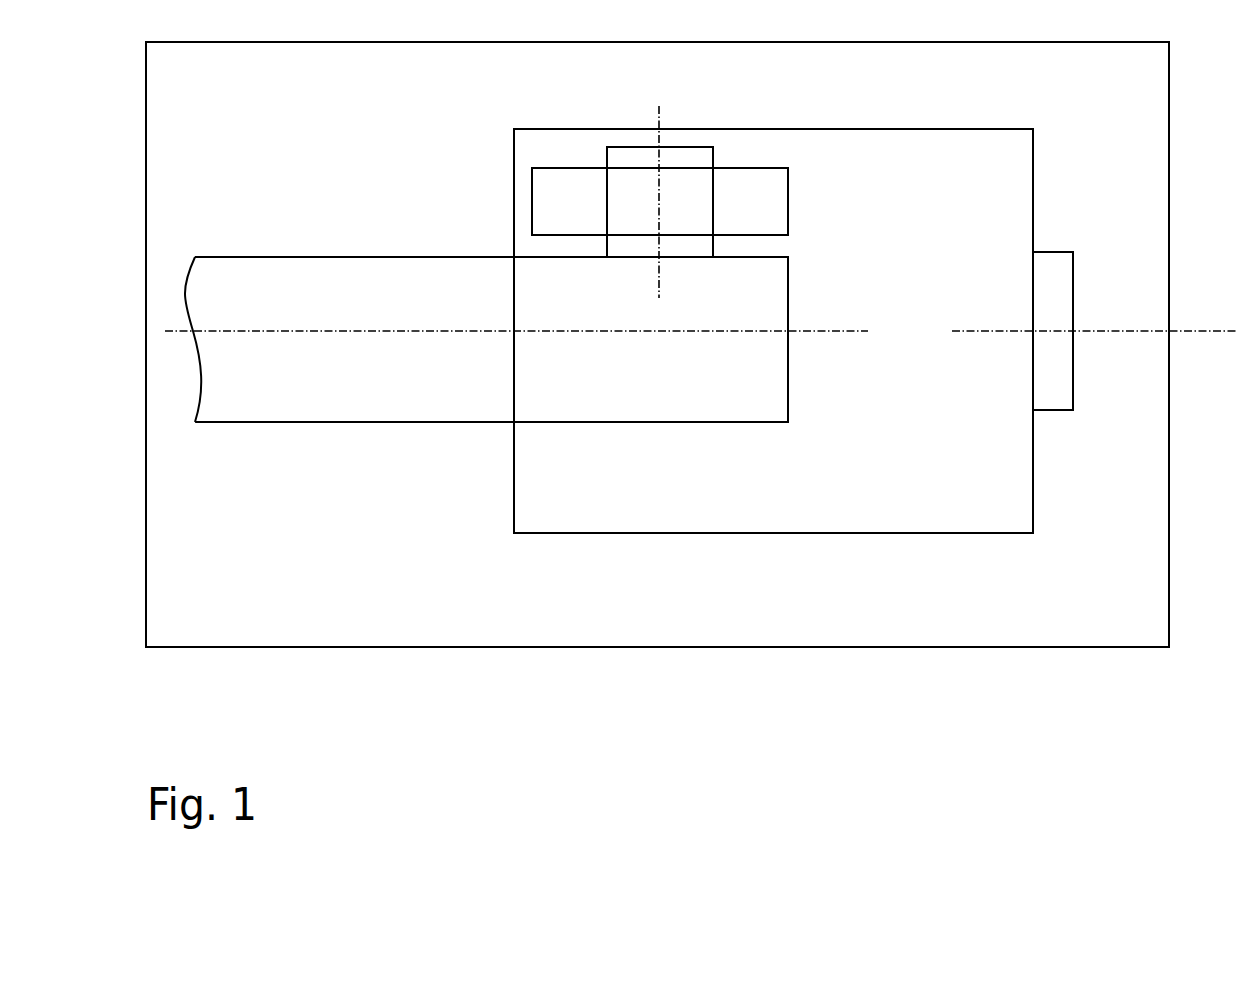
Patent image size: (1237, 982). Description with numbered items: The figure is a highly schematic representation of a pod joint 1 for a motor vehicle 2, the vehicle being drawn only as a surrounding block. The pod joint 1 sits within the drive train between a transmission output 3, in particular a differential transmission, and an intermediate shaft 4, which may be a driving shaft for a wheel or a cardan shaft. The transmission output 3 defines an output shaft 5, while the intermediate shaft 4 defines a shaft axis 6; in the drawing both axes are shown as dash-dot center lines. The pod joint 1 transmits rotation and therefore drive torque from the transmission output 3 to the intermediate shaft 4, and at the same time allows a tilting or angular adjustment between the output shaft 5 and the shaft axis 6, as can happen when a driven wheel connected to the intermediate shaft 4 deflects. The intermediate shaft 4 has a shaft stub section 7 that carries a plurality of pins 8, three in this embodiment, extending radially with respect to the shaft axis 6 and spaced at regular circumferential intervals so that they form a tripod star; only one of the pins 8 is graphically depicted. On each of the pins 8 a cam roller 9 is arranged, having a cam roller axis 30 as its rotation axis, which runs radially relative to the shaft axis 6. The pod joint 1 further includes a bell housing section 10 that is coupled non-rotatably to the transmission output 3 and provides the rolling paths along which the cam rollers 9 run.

The pod joint 1 is at (440, 125).
The motor vehicle 2 is at (657, 344).
The transmission output 3 is at (1053, 331).
The intermediate shaft 4 is at (349, 339).
The output shaft 5 is at (1182, 331).
The shaft axis 6 is at (407, 331).
The shaft stub section 7 is at (651, 339).
The pins 8 is at (713, 157).
The cam roller 9 is at (788, 215).
The bell housing section 10 is at (818, 129).
The cam roller axis 30 is at (662, 113).